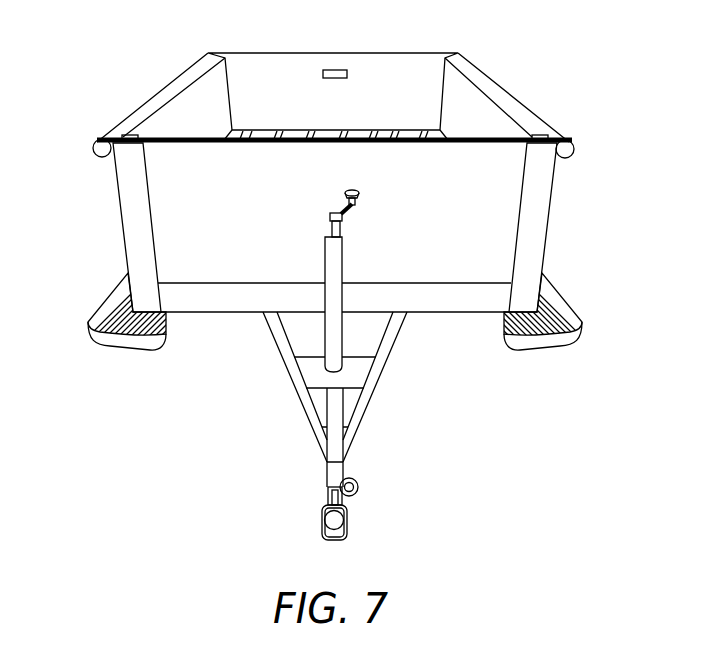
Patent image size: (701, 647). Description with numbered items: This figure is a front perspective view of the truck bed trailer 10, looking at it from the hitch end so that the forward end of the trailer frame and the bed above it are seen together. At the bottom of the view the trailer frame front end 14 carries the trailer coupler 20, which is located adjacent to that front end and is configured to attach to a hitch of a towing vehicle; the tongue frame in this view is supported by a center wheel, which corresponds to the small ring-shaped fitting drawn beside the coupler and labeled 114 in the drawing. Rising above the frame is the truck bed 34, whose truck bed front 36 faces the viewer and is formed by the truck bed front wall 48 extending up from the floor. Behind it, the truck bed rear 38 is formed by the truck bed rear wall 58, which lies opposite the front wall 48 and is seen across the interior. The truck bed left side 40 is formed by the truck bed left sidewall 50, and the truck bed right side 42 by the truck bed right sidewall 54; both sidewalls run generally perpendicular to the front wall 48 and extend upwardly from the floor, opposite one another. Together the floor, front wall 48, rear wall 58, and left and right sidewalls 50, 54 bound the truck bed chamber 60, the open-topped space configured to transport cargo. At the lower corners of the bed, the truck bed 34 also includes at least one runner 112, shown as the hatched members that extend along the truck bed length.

The truck bed trailer 10 is at (597, 106).
The trailer frame front end 14 is at (338, 445).
The trailer coupler 20 is at (349, 528).
The truck bed 34 is at (540, 202).
The truck bed front 36 is at (407, 259).
The truck bed front wall 48 is at (487, 235).
The truck bed rear 38 is at (385, 41).
The truck bed rear wall 58 is at (345, 70).
The truck bed left side 40 is at (512, 85).
The truck bed left sidewall 50 is at (473, 100).
The truck bed right side 42 is at (139, 97).
The truck bed right sidewall 54 is at (177, 122).
The truck bed chamber 60 is at (255, 105).
The runner 112 is at (555, 322).
The safety chain ring 114 is at (355, 478).